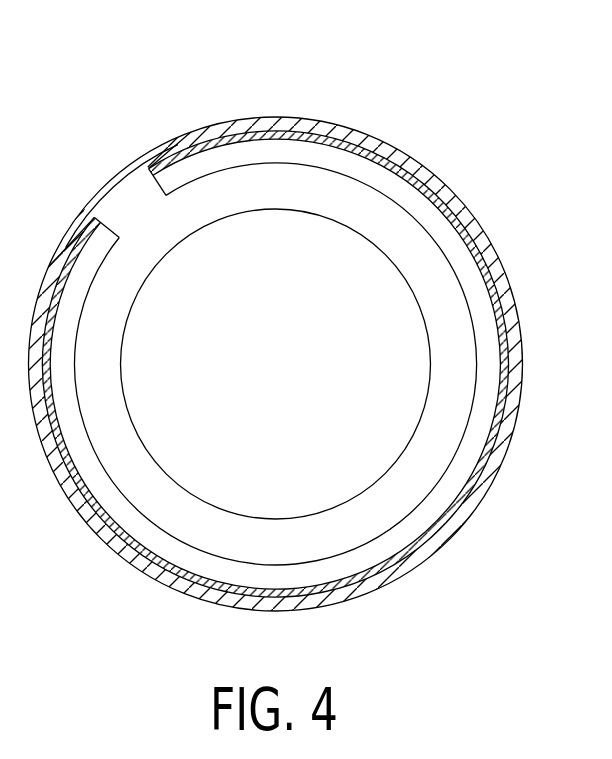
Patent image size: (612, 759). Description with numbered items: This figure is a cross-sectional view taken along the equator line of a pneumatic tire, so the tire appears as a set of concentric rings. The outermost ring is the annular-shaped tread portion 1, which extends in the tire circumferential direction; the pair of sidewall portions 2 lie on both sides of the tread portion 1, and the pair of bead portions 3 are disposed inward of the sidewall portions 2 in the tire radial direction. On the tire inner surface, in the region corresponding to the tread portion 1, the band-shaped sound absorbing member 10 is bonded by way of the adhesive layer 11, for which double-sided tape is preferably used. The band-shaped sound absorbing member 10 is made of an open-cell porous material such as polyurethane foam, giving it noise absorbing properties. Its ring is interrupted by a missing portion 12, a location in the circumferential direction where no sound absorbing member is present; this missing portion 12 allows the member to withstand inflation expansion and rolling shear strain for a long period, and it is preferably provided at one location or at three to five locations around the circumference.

The tread portion 1 is at (330, 126).
The sidewall portions 2 is at (395, 217).
The bead portions 3 is at (385, 240).
The band-shaped sound absorbing member 10 is at (280, 147).
The adhesive layer 11 is at (224, 138).
The missing portion 12 is at (132, 203).